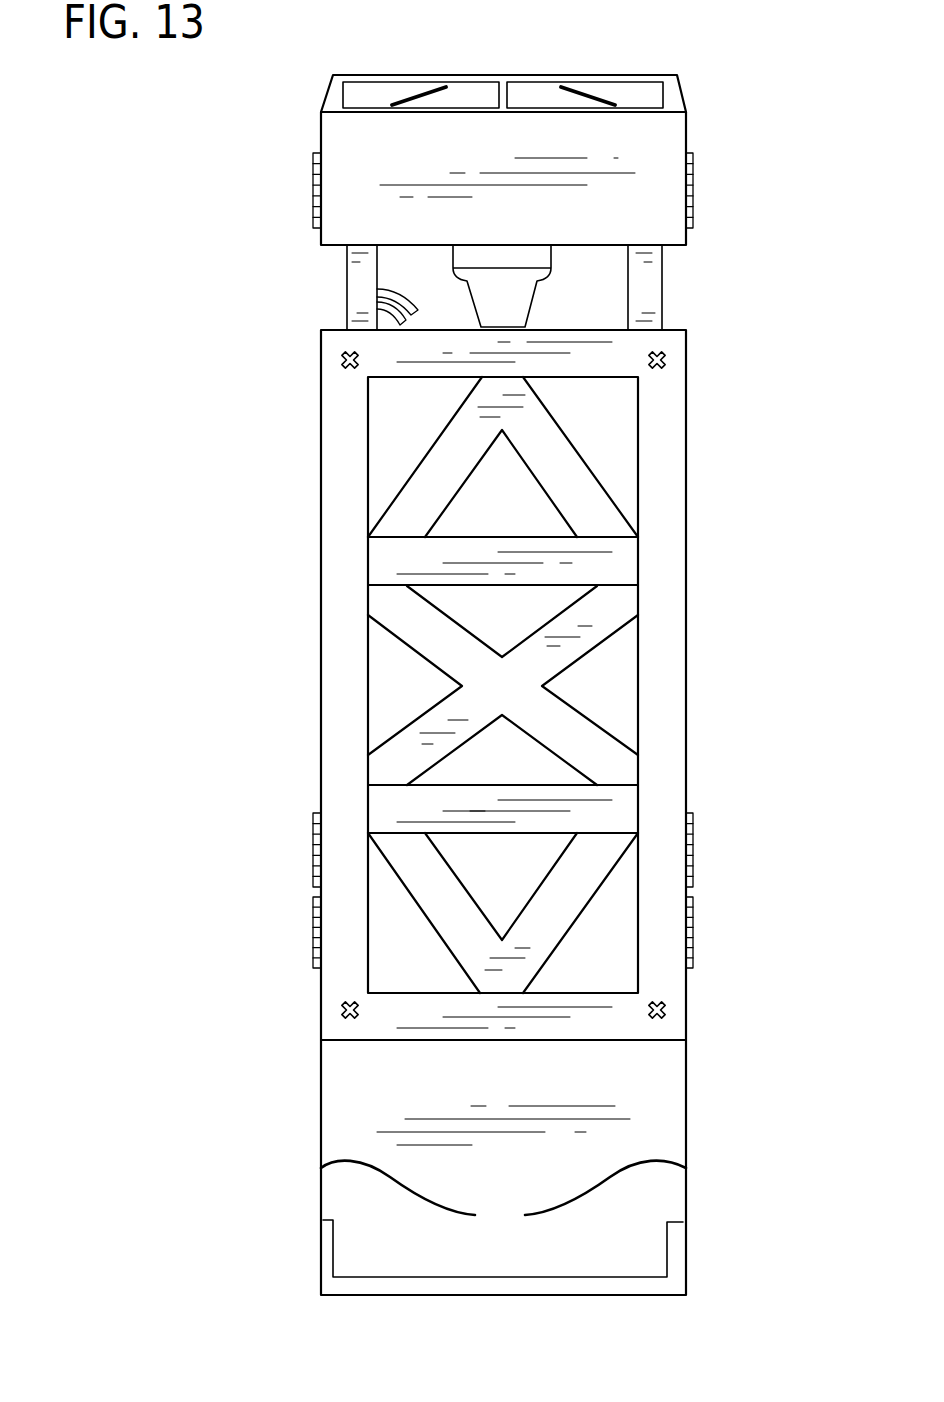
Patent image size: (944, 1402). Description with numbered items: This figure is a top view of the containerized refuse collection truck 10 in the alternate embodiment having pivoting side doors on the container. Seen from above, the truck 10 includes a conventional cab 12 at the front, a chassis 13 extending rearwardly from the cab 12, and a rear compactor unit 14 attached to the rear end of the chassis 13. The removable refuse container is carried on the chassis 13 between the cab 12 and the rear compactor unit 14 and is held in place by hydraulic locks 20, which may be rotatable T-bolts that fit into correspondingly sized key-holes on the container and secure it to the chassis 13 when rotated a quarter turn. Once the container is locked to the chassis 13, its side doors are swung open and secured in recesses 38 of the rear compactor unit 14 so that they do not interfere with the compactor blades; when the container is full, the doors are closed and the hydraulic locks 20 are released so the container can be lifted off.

The containerized truck 10 is at (167, 1202).
The cab 12 is at (667, 208).
The chassis 13 is at (658, 500).
The rear compactor unit 14 is at (556, 1178).
The hydraulic locks 20 is at (340, 357).
The recesses 38 is at (503, 1196).